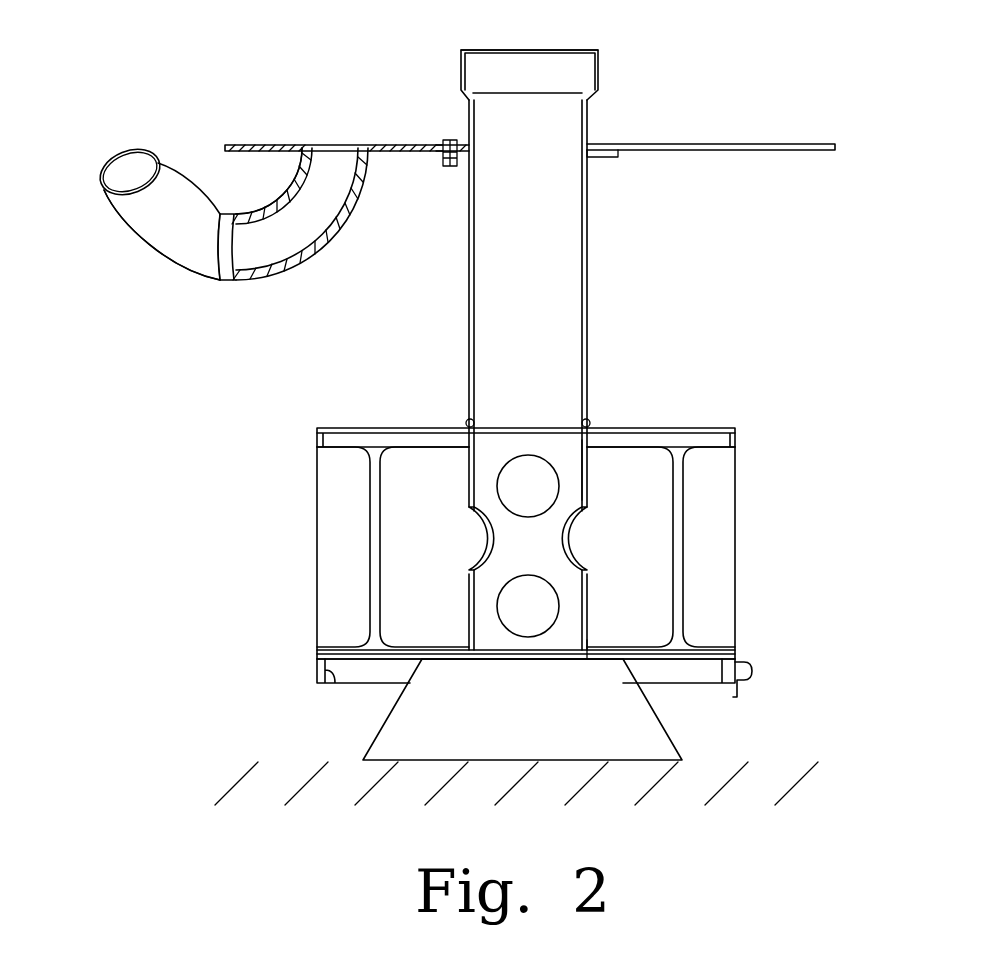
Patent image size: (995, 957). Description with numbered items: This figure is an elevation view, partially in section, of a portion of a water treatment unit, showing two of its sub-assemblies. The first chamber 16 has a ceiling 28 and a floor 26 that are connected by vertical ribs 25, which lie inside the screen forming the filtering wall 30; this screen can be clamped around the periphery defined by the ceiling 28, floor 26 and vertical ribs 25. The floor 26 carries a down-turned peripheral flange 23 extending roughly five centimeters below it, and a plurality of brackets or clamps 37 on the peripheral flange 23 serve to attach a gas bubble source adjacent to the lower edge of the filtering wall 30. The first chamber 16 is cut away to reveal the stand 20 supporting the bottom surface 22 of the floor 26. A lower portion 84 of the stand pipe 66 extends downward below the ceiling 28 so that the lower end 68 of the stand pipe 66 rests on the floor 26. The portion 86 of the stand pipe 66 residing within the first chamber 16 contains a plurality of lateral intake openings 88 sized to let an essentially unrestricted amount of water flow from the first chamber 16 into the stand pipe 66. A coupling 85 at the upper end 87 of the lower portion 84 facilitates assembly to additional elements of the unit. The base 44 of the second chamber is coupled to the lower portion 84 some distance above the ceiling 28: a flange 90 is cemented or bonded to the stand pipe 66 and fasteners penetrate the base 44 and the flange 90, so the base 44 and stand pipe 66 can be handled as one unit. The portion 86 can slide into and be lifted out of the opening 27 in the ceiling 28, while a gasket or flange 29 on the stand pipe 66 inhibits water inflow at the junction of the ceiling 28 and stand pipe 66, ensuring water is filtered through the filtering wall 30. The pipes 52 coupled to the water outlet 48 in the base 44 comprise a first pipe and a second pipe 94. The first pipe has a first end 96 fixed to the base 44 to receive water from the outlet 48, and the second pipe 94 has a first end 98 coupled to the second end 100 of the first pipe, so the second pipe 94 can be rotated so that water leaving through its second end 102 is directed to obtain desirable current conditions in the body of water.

The first chamber 16 is at (712, 551).
The stand 20 is at (660, 742).
The bottom surface 22 is at (392, 660).
The down-turned peripheral flange 23 is at (333, 683).
The vertical ribs 25 is at (682, 570).
The floor 26 is at (355, 657).
The opening 27 is at (590, 423).
The ceiling 28 is at (695, 432).
The gasket or flange 29 is at (466, 422).
The filtering wall 30 is at (317, 503).
The brackets or clamps 37 is at (754, 684).
The base 44 is at (725, 151).
The water outlet 48 is at (340, 150).
The pipes 52 is at (192, 268).
The stand pipe 66 is at (469, 272).
The lower end 68 is at (600, 650).
The lower portion 84 is at (588, 302).
The coupling 85 is at (598, 86).
The portion of the stand pipe 86 is at (588, 484).
The upper end 87 is at (600, 50).
The lateral intake openings 88 is at (497, 488).
The flange 90 is at (606, 157).
The second pipe 94 is at (140, 238).
The first end 96 is at (366, 152).
The first end 98 is at (232, 282).
The second end 100 is at (224, 216).
The second end 102 is at (134, 168).